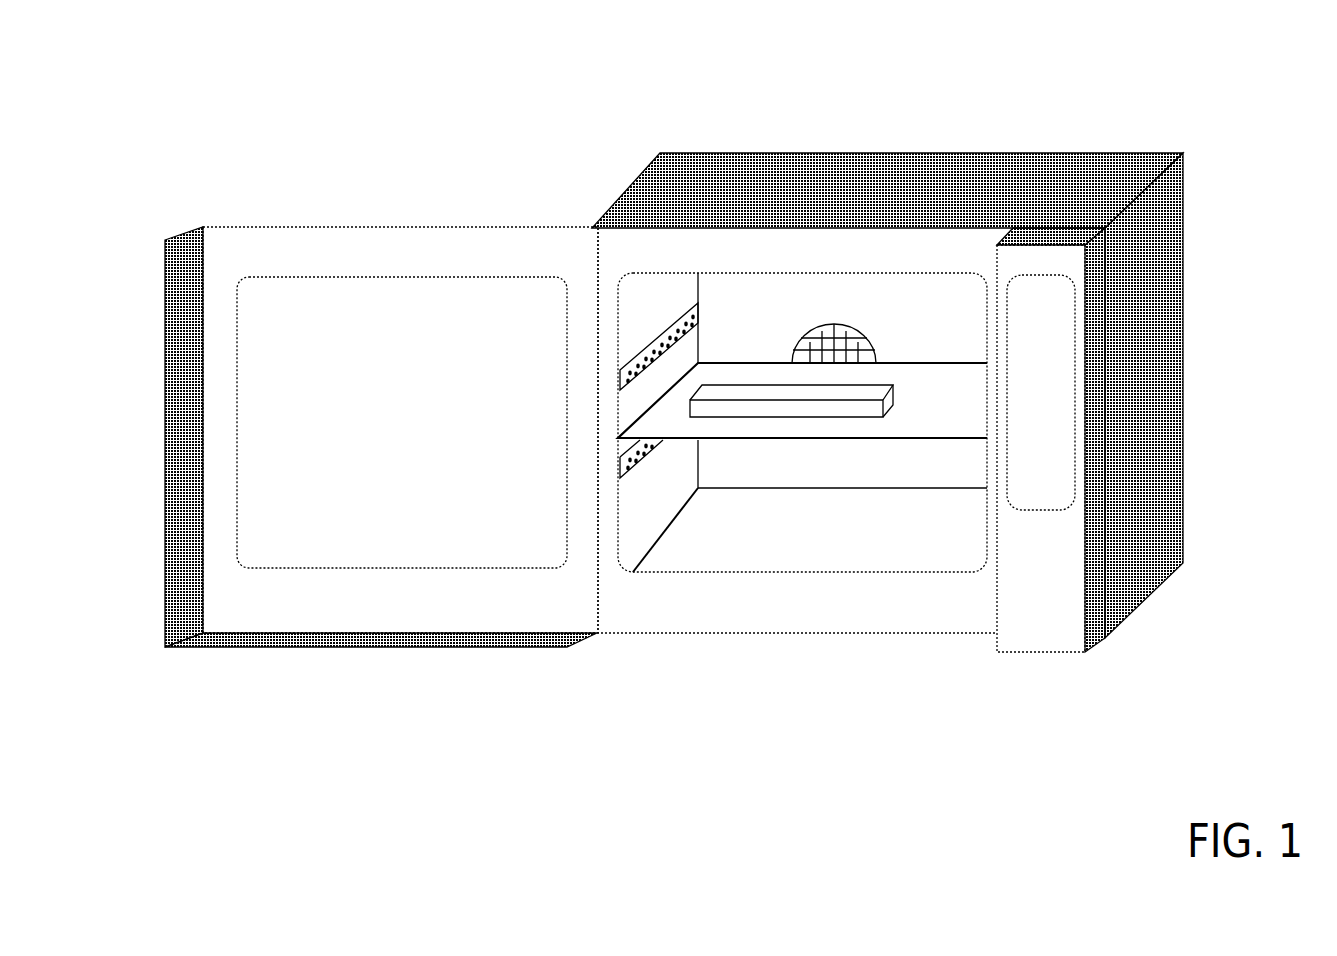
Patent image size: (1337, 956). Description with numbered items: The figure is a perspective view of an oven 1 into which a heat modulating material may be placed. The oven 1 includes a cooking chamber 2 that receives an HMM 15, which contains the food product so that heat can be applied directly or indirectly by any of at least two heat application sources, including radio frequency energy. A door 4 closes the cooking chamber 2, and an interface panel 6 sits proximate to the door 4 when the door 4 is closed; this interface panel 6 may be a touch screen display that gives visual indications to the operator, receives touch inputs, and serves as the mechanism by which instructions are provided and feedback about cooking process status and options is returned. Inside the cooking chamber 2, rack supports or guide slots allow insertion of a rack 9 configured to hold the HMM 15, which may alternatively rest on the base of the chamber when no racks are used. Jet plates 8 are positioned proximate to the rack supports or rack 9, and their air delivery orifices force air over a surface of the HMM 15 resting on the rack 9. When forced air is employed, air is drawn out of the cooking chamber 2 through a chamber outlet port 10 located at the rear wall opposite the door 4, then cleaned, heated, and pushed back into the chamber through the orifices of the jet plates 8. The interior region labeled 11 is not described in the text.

The oven 1 is at (665, 113).
The cooking chamber 2 is at (833, 555).
The door 4 is at (412, 605).
The interface panel 6 is at (1058, 490).
The jet plates 8 is at (652, 347).
The rack 9 is at (913, 385).
The chamber outlet port 10 is at (850, 343).
The chamber 11 is at (905, 532).
The HMM 15 is at (775, 390).